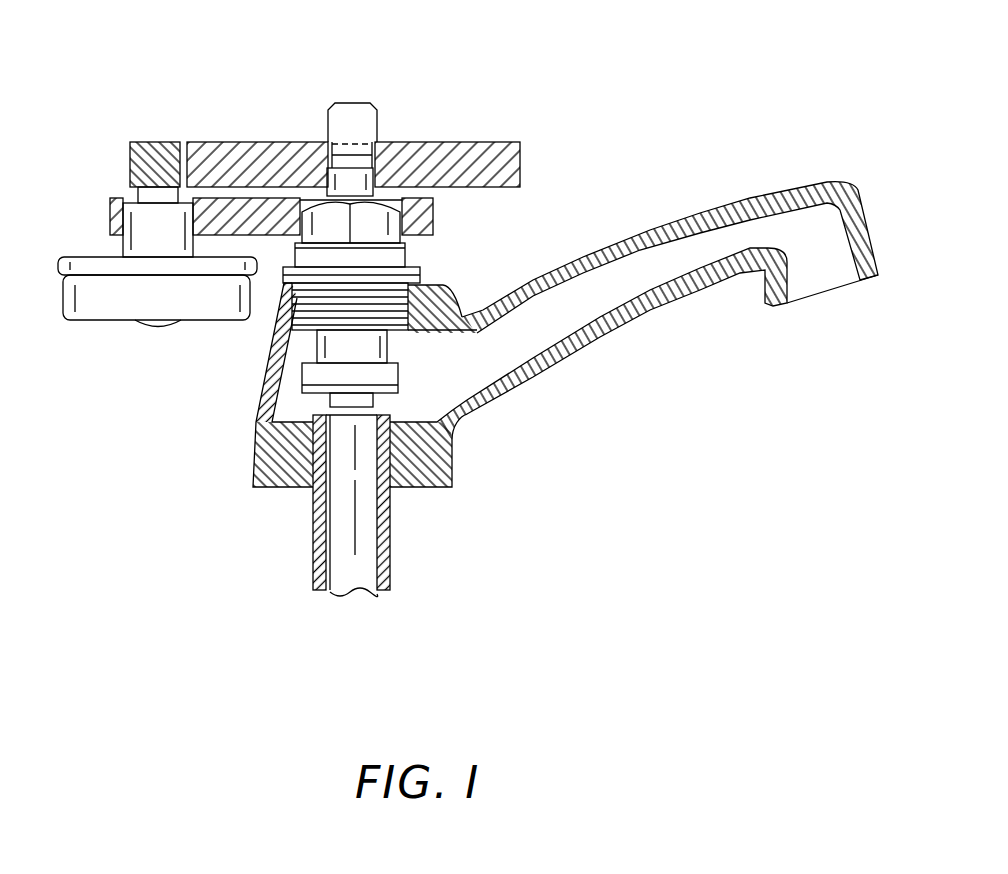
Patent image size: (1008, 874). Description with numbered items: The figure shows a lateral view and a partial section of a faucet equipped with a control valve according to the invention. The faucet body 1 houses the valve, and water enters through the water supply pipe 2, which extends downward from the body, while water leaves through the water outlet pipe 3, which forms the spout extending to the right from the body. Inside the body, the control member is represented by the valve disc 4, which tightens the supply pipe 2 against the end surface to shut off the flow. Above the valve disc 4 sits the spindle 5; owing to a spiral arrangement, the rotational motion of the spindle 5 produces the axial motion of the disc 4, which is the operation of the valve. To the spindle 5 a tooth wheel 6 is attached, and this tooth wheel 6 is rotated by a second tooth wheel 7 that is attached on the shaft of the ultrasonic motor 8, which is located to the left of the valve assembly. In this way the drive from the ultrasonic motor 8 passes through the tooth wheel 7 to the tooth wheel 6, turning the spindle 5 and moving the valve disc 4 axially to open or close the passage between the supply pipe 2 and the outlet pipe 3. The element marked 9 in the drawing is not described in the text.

The faucet body 1 is at (253, 455).
The water supply pipe 2 is at (350, 590).
The water outlet pipe 3 is at (635, 282).
The valve disc 4 is at (305, 372).
The spindle 5 is at (358, 117).
The tooth wheel 6 is at (470, 142).
The tooth wheel 7 is at (155, 142).
The ultrasonic motor 8 is at (62, 300).
The spacer plate 9 is at (433, 213).